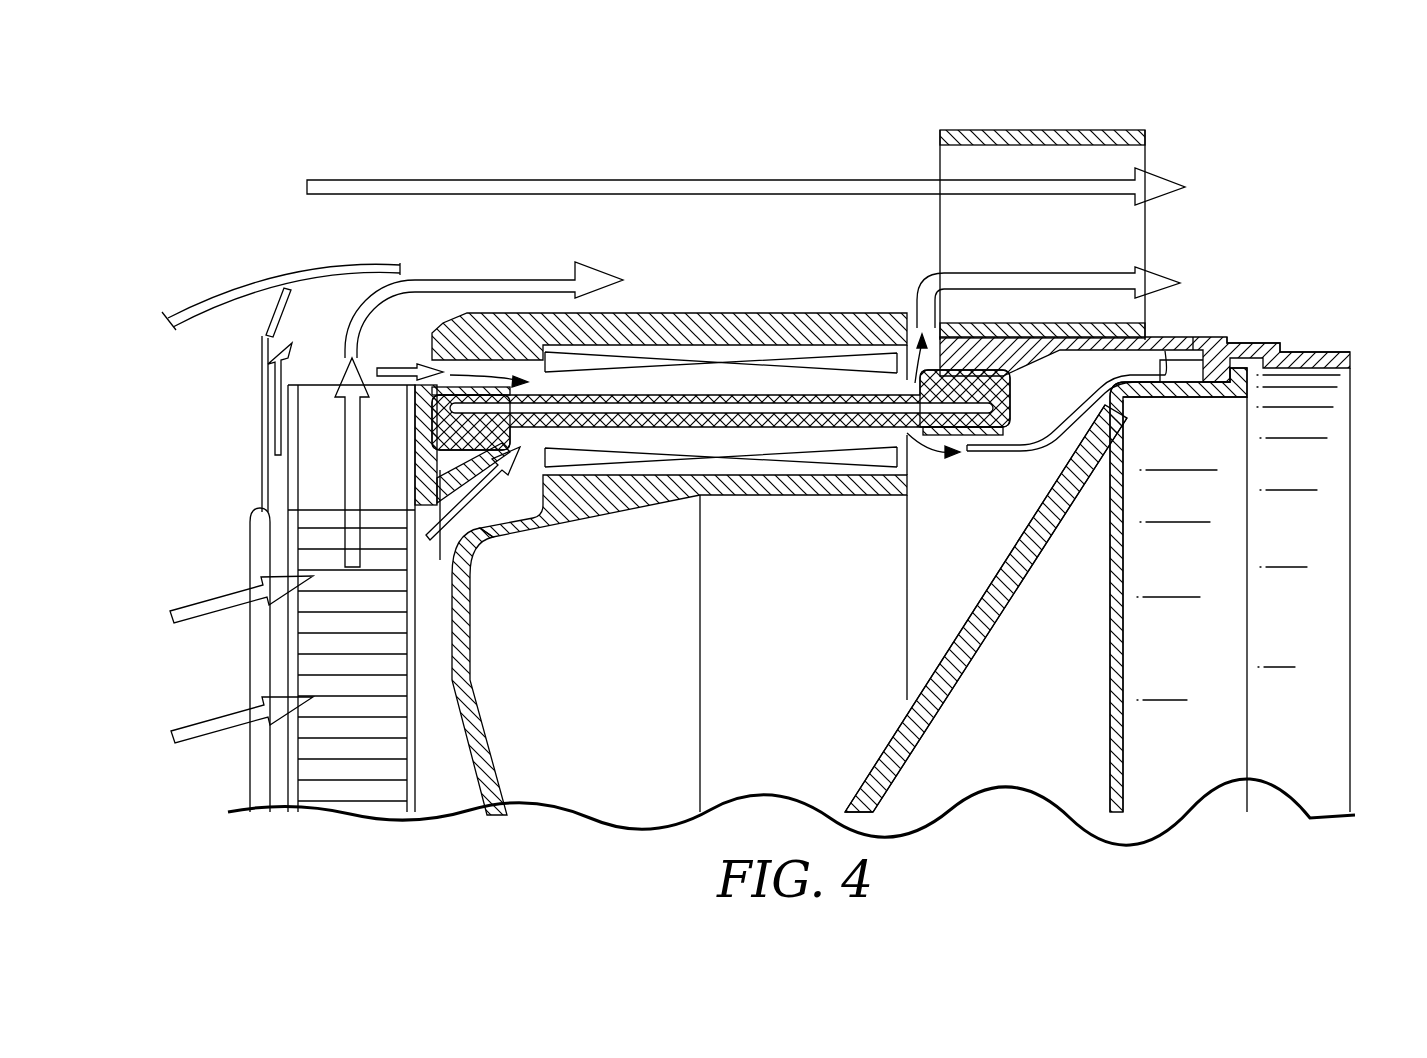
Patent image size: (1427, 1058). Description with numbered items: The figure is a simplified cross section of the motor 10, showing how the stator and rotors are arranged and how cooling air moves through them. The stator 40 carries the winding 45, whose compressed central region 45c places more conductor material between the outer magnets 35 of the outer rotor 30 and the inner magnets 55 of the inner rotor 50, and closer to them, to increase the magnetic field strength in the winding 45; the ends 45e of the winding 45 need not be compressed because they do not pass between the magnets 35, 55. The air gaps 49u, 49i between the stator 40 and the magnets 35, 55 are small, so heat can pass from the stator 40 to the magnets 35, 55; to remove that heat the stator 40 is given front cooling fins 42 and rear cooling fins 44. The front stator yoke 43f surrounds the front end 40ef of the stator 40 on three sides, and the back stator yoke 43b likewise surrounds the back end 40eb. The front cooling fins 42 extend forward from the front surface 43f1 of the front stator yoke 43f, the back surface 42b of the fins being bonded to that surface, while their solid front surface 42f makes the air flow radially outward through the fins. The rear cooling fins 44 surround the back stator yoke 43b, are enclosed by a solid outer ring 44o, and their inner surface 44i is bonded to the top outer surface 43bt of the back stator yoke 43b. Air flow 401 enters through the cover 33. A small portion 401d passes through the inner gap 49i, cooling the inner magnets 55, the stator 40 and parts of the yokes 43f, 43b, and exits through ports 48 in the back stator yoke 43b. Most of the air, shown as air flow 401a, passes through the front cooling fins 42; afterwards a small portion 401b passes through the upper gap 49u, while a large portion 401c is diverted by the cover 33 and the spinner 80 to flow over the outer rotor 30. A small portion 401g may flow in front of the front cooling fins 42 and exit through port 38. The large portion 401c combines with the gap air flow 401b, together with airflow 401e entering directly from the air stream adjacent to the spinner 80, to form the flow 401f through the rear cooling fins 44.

The motor 10 is at (368, 126).
The spinner 80 is at (200, 298).
The cover 33 is at (262, 330).
The port 38 is at (340, 298).
The front cooling fins 42 is at (313, 390).
The front surface of front cooling fins 42f is at (267, 606).
The back surface of cooling fins 42b is at (437, 485).
The front stator yoke 43f is at (430, 506).
The front surface of front stator yoke 43f1 is at (403, 410).
The back stator yoke 43b is at (1067, 345).
The top outer surface of back stator yoke 43bt is at (1093, 345).
The rear cooling fins 44 is at (990, 165).
The solid outer ring 44o is at (1110, 130).
The inner surface of rear cooling fins 44i is at (995, 350).
The outer rotor 30 is at (648, 312).
The outer magnets 35 is at (698, 350).
The stator 40 is at (796, 384).
The front end of stator 40ef is at (430, 455).
The back end of stator 40eb is at (962, 365).
The winding 45 is at (800, 395).
The compressed central region of winding 45c is at (652, 413).
The ends of winding 45e is at (430, 413).
The ports 48 is at (1180, 330).
The upper air gap 49u is at (750, 387).
The inner air gap 49i is at (857, 432).
The inner rotor 50 is at (470, 652).
The inner magnets 55 is at (745, 490).
The air flow 401 is at (193, 735).
The air flow through front cooling fins 401a is at (345, 543).
The small portion of air flow 401b is at (407, 353).
The large portion of air flow 401c is at (513, 277).
The small portion of air flow 401d is at (457, 470).
The airflow entering from air stream 401e is at (620, 187).
The air flow through rear cooling fins 401f is at (1155, 277).
The small portion of air flow 401g is at (270, 362).